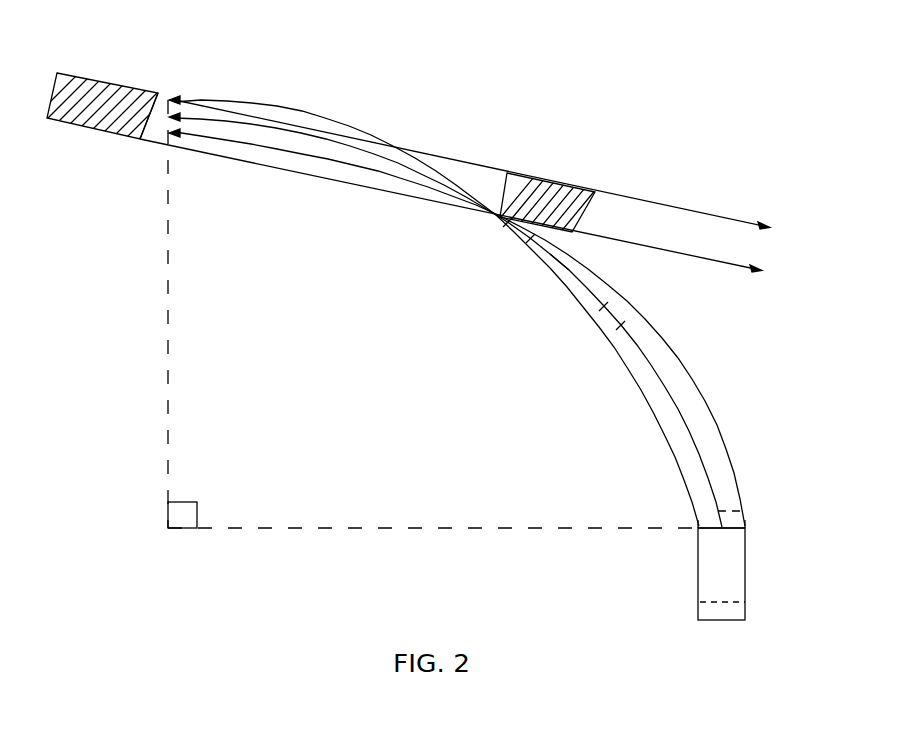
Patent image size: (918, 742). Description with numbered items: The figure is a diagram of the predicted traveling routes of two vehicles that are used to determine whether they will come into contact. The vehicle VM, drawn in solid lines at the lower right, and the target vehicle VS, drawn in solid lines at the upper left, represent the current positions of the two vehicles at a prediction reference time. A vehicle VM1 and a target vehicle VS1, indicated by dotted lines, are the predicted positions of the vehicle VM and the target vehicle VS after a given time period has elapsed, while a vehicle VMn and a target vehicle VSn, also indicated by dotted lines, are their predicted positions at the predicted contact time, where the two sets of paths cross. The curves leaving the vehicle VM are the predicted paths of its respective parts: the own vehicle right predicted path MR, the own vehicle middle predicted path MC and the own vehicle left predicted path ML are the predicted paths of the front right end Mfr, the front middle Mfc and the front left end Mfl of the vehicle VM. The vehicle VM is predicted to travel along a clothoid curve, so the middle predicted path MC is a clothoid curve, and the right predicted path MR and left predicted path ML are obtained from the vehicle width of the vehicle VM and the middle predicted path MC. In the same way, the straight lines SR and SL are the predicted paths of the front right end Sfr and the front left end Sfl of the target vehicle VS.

The target vehicle VS is at (100, 80).
The front left end of the target vehicle Sfl is at (151, 93).
The front right end of the target vehicle Sfr is at (140, 140).
The target vehicle at predicted position after elapse of time period VS1 is at (171, 96).
The predicted path of front left end of target vehicle SL is at (653, 203).
The predicted path of front right end of target vehicle SR is at (677, 253).
The target vehicle at predicted contact time VSn is at (570, 186).
The vehicle at predicted contact time VMn is at (580, 287).
The own vehicle left predicted path ML is at (637, 367).
The own vehicle middle predicted path MC is at (677, 390).
The own vehicle right predicted path MR is at (712, 410).
The vehicle VM is at (725, 578).
The vehicle at predicted position after elapse of time period VM1 is at (745, 490).
The front left end of the vehicle Mfl is at (695, 523).
The front middle of the vehicle Mfc is at (698, 513).
The front right end of the vehicle Mfr is at (747, 520).